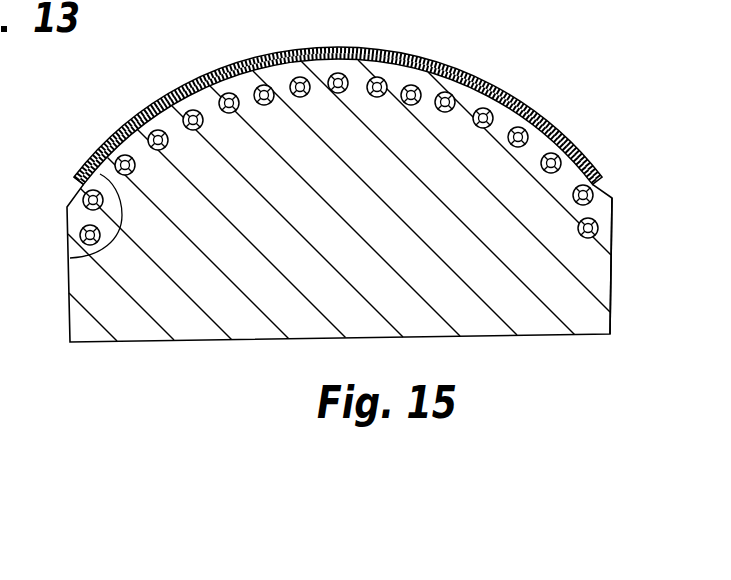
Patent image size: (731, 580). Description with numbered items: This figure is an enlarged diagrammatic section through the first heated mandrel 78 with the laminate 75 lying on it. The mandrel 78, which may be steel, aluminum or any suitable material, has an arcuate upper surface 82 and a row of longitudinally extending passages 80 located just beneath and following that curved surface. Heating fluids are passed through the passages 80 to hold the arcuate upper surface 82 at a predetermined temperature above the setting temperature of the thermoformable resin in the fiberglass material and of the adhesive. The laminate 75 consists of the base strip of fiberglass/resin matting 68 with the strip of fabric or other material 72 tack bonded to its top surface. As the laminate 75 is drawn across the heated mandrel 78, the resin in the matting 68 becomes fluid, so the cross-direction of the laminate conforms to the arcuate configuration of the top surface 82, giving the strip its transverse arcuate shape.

The fiberglass/resin matting 68 is at (70, 258).
The fabric material 72 is at (83, 166).
The laminate 75 is at (375, 50).
The heated mandrel 78 is at (553, 272).
The longitudinally extending passages 80 is at (296, 78).
The arcuate upper surface 82 is at (612, 197).